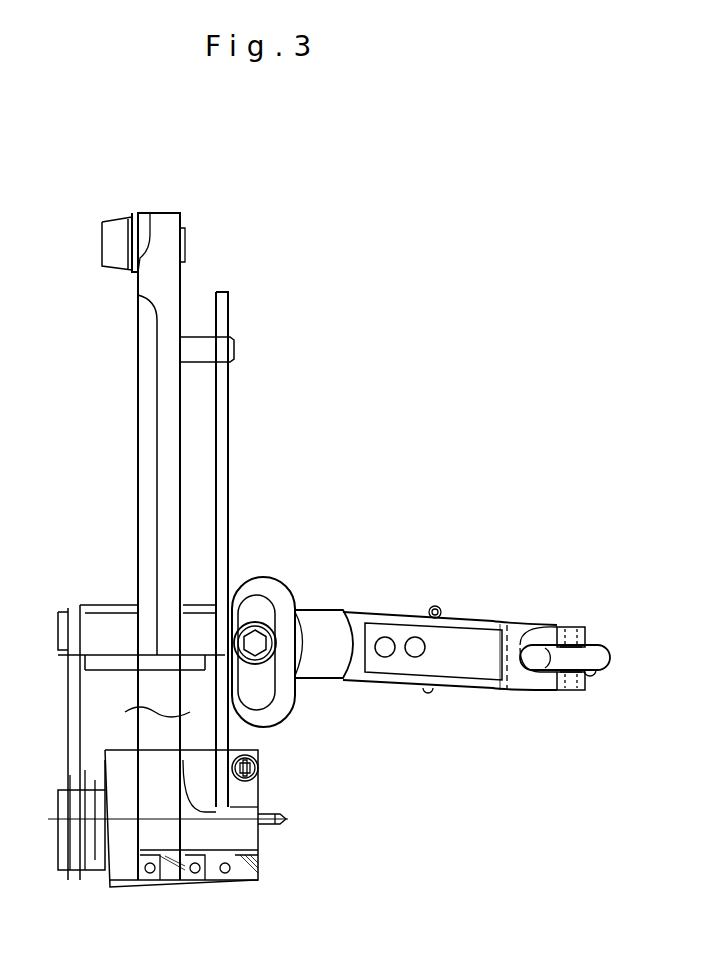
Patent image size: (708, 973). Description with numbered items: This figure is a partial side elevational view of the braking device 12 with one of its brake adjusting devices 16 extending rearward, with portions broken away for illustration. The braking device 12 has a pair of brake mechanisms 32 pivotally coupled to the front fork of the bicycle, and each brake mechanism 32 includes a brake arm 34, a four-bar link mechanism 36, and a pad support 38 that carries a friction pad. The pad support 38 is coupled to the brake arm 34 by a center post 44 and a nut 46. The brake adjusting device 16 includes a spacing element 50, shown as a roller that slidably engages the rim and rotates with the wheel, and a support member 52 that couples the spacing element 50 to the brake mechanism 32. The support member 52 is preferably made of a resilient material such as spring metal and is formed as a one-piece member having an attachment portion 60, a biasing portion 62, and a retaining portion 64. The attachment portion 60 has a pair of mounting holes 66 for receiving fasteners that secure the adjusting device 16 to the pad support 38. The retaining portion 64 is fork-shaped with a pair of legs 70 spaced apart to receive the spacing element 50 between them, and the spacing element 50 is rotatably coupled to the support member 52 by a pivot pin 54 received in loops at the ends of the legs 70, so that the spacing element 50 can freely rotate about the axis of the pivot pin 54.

The braking device 12 is at (374, 317).
The brake adjusting device 16 is at (514, 608).
The brake mechanism 32 is at (276, 544).
The brake arm 34 is at (136, 491).
The four-bar link mechanism 36 is at (305, 682).
The pad support 38 is at (463, 690).
The center post 44 is at (268, 616).
The nut 46 is at (290, 612).
The spacing element 50 is at (600, 648).
The support member 52 is at (528, 696).
The pivot pin 54 is at (566, 630).
The attachment portion 60 is at (410, 682).
The biasing portion 62 is at (508, 693).
The retaining portion 64 is at (575, 692).
The mounting holes 66 is at (415, 637).
The legs 70 is at (580, 627).